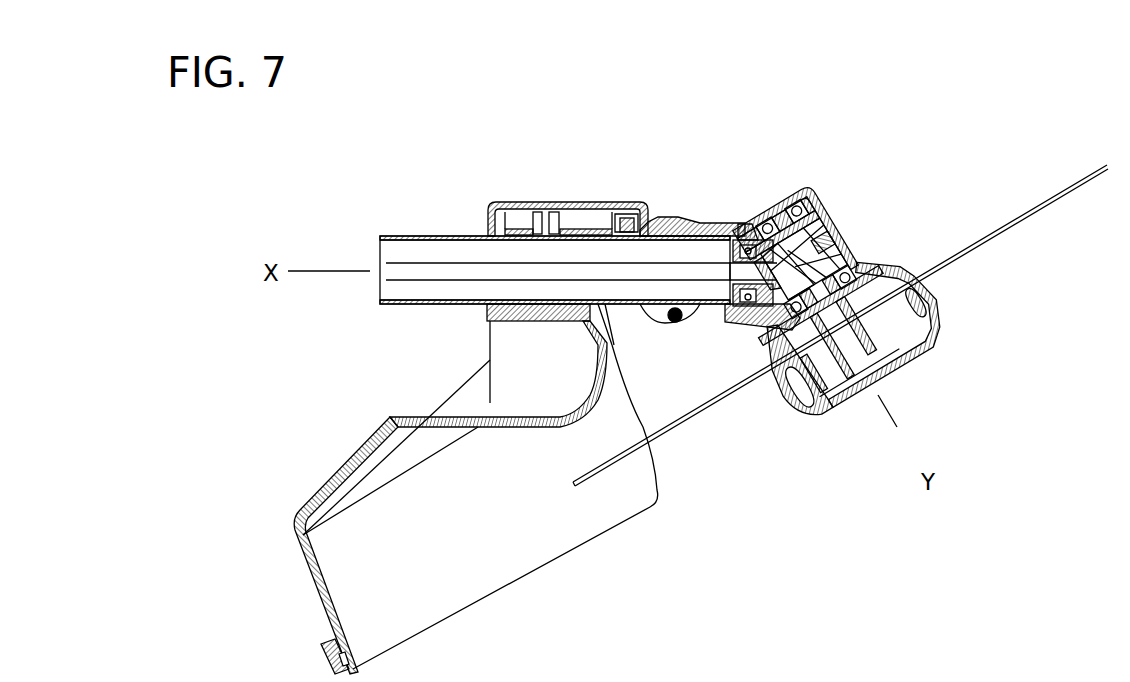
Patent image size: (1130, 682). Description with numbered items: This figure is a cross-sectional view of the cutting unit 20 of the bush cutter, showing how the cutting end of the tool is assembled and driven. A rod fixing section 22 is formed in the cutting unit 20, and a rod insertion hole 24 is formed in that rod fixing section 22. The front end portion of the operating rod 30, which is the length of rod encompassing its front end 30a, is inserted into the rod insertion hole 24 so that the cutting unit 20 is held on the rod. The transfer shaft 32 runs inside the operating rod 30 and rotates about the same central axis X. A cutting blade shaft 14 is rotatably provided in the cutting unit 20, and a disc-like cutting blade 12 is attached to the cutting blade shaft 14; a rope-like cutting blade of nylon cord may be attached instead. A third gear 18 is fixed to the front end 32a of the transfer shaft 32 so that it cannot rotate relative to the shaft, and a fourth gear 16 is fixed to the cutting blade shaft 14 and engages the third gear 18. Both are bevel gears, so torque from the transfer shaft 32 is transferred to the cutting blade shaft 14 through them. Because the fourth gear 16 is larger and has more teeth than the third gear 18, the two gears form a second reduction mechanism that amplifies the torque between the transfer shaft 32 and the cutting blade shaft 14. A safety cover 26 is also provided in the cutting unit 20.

The cutting blade 12 is at (1022, 216).
The cutting blade shaft 14 is at (877, 273).
The fourth gear 16 is at (830, 215).
The third gear 18 is at (748, 318).
The cutting unit 20 is at (786, 190).
The rod fixing section 22 is at (697, 225).
The rod insertion hole 24 is at (672, 226).
The safety cover 26 is at (348, 455).
The operating rod 30 is at (416, 237).
The front end 30a is at (738, 235).
The transfer shaft 32 is at (452, 272).
The front end of the transfer shaft 32a is at (833, 232).